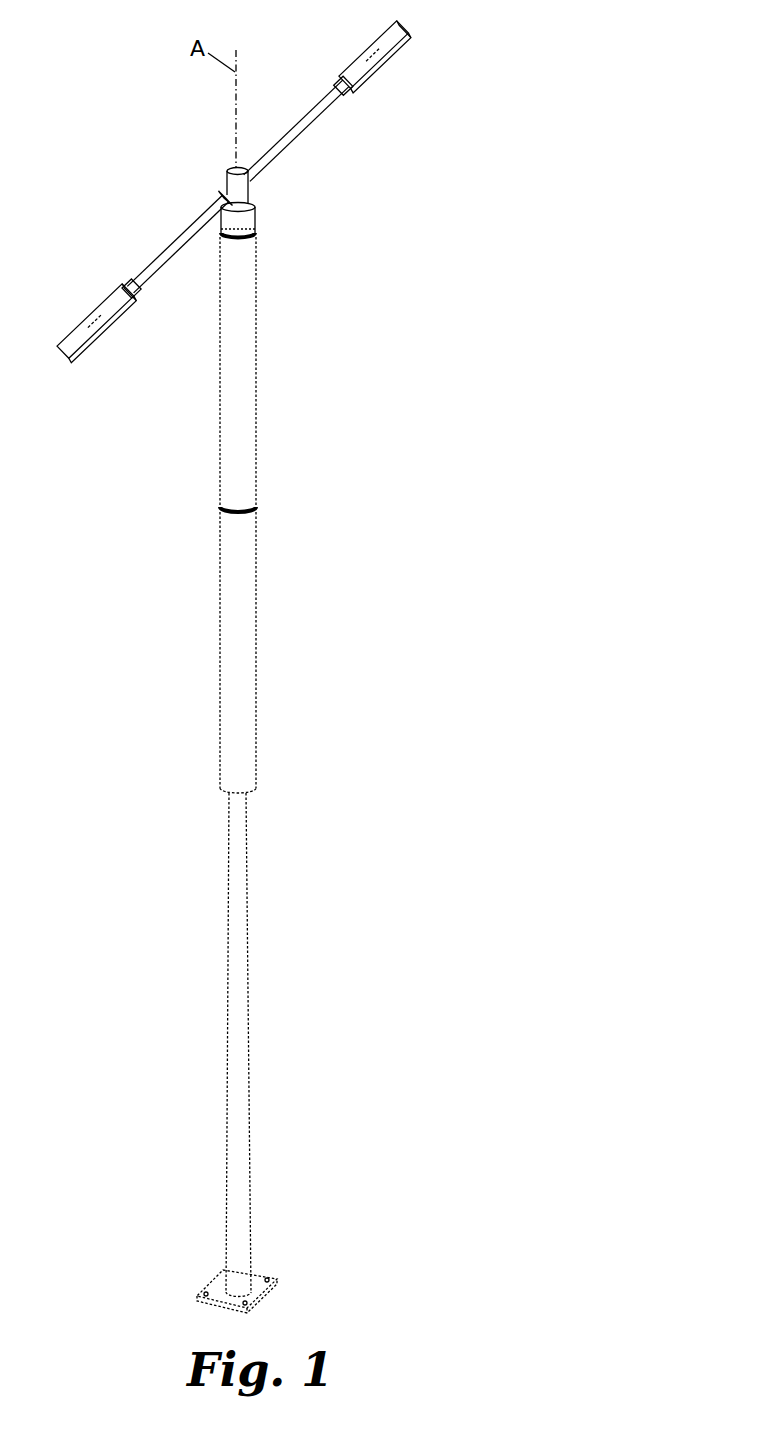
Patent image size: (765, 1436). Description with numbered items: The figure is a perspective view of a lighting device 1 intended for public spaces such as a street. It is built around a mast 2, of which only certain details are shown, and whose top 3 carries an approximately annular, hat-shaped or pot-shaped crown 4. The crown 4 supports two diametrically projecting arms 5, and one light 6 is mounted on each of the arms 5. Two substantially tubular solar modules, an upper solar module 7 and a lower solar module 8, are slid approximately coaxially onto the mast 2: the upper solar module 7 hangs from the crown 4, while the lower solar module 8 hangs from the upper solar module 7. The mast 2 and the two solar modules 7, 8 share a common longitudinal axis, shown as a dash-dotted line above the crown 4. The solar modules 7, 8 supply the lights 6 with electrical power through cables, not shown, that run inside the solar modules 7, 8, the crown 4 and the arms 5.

The lighting device 1 is at (490, 1206).
The mast 2 is at (237, 1053).
The top of the mast 3 is at (276, 232).
The crown 4 is at (228, 183).
The projecting arms 5 is at (307, 120).
The light 6 is at (387, 43).
The upper solar module 7 is at (248, 443).
The lower solar module 8 is at (248, 720).